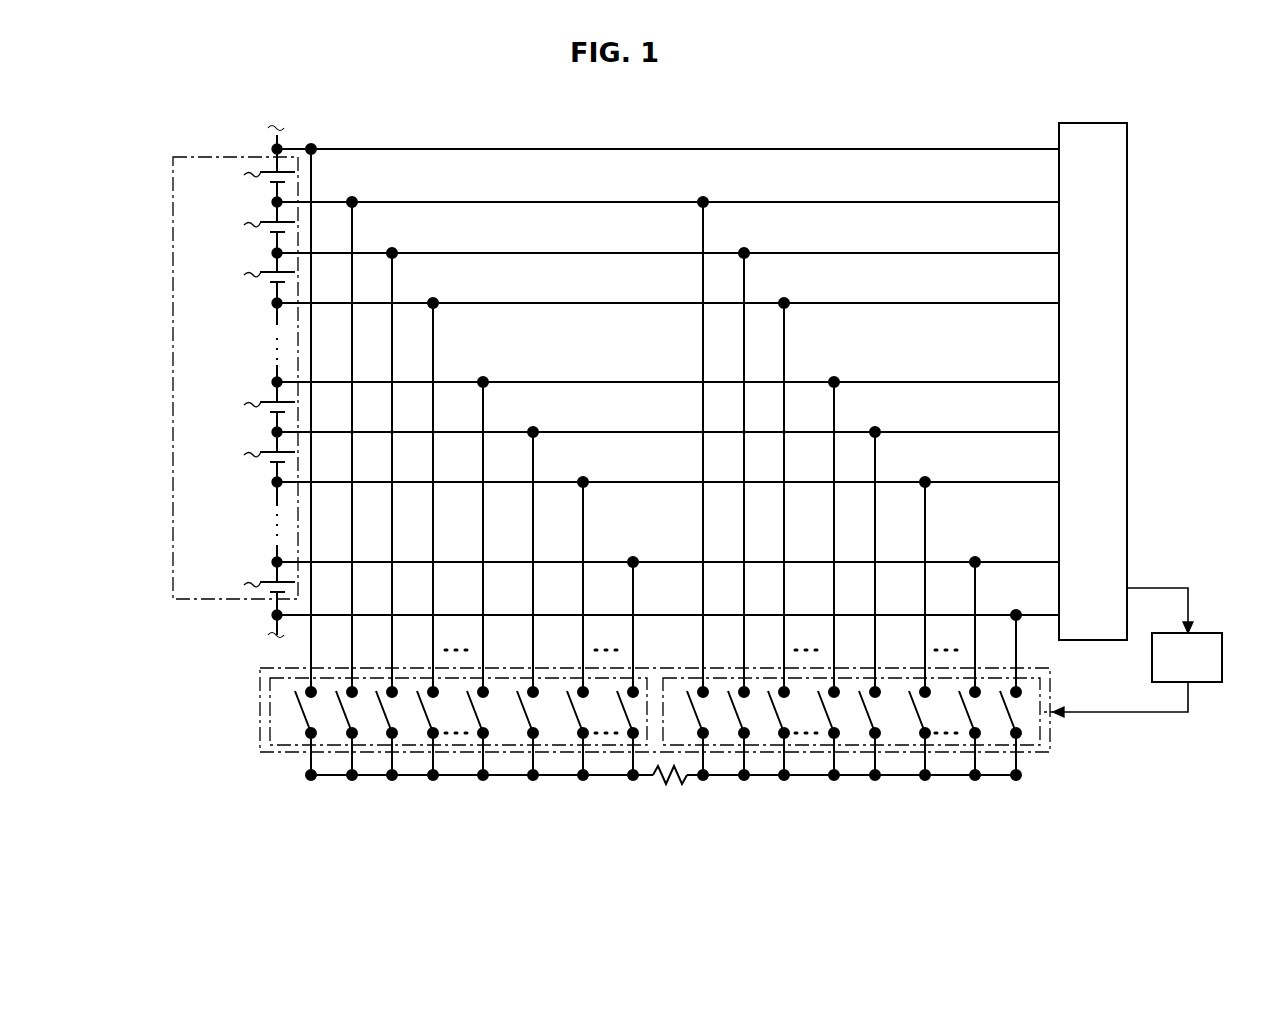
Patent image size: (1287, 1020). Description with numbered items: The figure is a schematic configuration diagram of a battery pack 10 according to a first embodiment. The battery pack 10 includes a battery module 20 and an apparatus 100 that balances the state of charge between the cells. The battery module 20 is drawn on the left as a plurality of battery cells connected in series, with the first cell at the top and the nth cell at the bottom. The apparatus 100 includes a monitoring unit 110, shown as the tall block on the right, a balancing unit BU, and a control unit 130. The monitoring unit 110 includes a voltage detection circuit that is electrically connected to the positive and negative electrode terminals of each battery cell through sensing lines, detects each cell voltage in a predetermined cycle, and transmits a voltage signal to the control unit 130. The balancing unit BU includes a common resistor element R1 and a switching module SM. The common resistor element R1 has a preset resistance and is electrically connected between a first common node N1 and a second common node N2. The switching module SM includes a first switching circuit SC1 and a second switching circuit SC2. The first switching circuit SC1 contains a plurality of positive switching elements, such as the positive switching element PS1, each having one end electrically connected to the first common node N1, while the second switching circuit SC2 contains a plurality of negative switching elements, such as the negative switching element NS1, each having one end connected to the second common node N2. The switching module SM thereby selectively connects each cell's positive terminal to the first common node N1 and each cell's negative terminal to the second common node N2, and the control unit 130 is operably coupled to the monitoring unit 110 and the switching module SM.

The battery pack 10 is at (339, 95).
The battery module 20 is at (185, 157).
The apparatus 100 is at (1170, 228).
The monitoring unit 110 is at (1102, 123).
The control unit 130 is at (1211, 633).
The balancing unit BU is at (233, 657).
The switching module SM is at (262, 681).
The first switching circuit SC1 is at (269, 711).
The second switching circuit SC2 is at (1040, 733).
The positive switching element PS1 is at (295, 462).
The negative switching element NS1 is at (687, 488).
The first common node N1 is at (634, 785).
The second common node N2 is at (1016, 785).
The common resistor element R1 is at (670, 786).